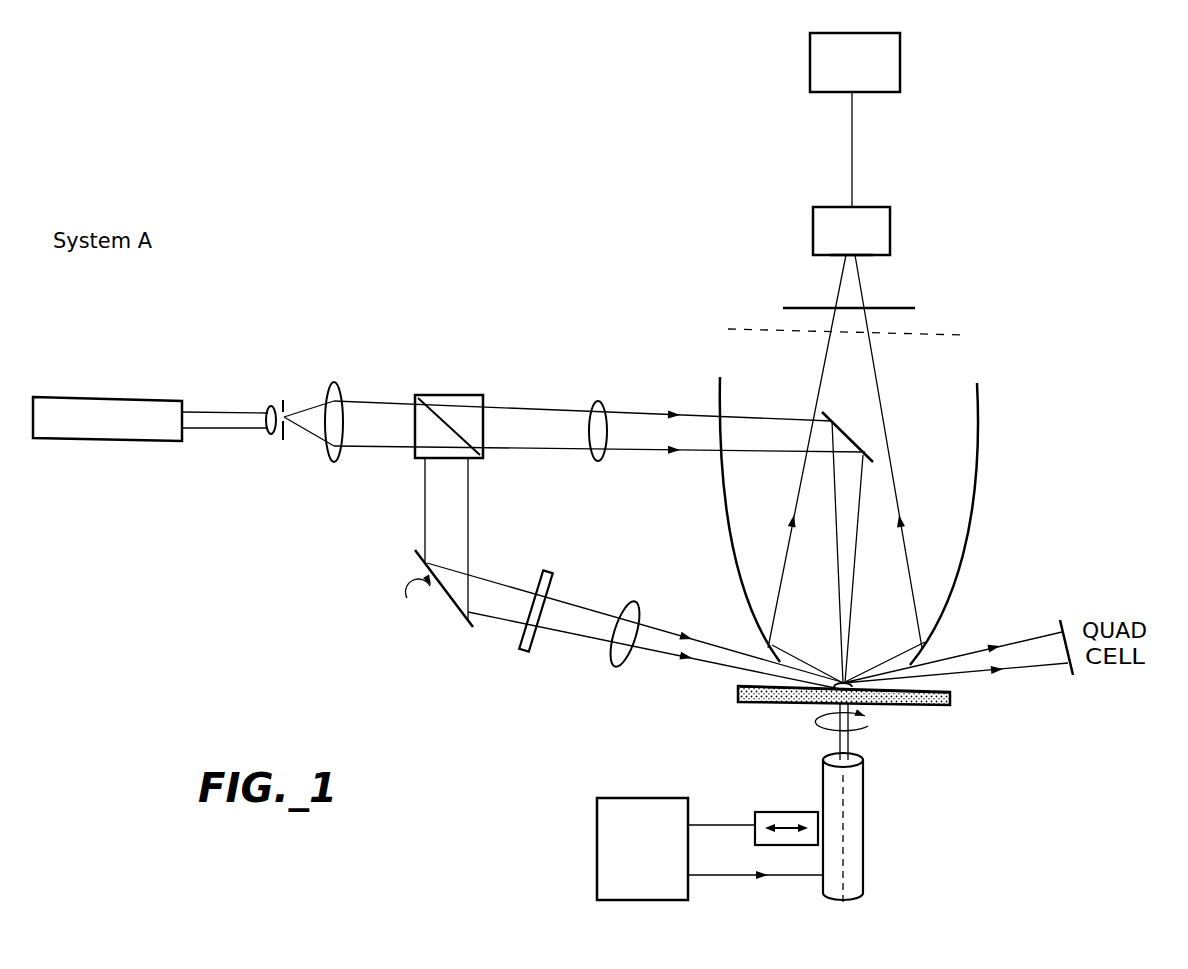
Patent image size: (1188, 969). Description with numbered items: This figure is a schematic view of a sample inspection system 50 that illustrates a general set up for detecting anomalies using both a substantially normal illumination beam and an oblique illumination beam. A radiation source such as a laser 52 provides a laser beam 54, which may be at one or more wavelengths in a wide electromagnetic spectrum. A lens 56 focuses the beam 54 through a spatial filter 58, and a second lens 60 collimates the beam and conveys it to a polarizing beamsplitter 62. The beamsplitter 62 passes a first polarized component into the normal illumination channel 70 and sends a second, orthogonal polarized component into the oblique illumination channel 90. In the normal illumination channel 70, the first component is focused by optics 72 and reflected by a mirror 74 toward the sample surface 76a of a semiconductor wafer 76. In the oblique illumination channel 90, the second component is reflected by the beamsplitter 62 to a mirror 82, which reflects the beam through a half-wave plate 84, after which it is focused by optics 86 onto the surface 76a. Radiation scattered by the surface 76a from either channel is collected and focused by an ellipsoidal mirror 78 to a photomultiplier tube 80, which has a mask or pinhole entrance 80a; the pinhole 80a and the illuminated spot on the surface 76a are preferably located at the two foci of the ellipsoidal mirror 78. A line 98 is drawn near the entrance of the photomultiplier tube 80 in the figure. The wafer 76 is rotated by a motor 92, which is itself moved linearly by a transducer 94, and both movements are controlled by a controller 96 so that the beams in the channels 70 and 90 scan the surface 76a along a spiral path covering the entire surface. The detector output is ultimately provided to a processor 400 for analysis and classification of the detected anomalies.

The sample inspection system 50 is at (412, 185).
The laser 52 is at (108, 395).
The laser beam 54 is at (248, 430).
The lens 56 is at (272, 407).
The spatial filter 58 is at (287, 402).
The lens 60 is at (334, 460).
The polarizing beamsplitter 62 is at (417, 393).
The normal illumination channel 70 is at (599, 430).
The optics 72 is at (601, 401).
The mirror 74 is at (846, 430).
The semiconductor wafer 76 is at (895, 721).
The sample surface 76a is at (937, 687).
The ellipsoidal mirror 78 is at (982, 460).
The photomultiplier tube 80 is at (862, 207).
The mask or pinhole entrance 80a is at (868, 256).
The mirror 82 is at (452, 605).
The half-wave plate 84 is at (525, 650).
The optics 86 is at (636, 600).
The oblique illumination channel 90 is at (636, 651).
The motor 92 is at (865, 850).
The transducer 94 is at (800, 812).
The controller 96 is at (597, 860).
The spatial filter 98 is at (808, 308).
The processor 400 is at (875, 92).